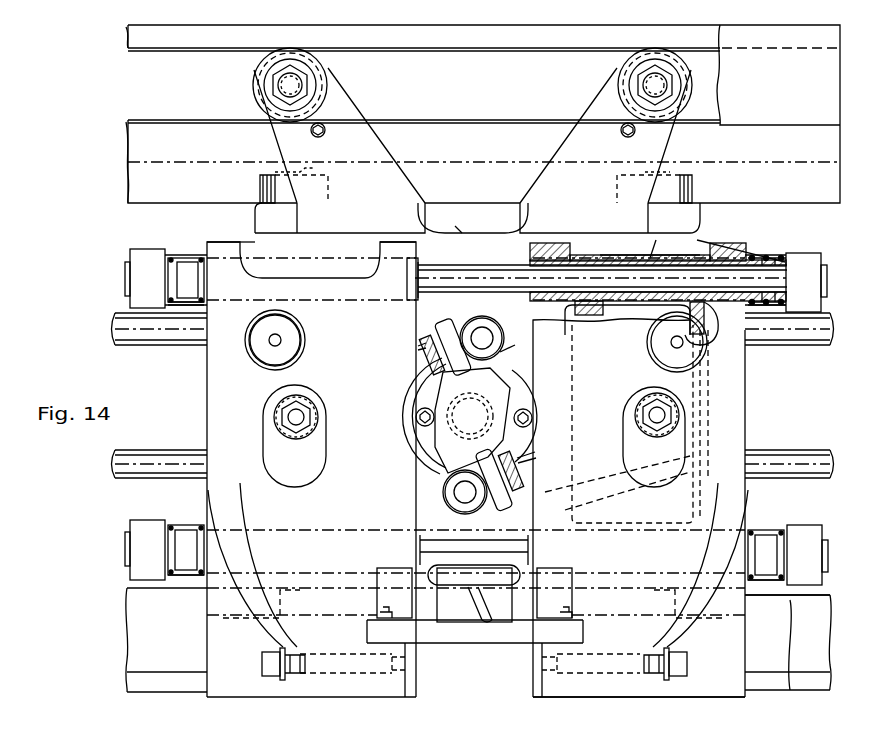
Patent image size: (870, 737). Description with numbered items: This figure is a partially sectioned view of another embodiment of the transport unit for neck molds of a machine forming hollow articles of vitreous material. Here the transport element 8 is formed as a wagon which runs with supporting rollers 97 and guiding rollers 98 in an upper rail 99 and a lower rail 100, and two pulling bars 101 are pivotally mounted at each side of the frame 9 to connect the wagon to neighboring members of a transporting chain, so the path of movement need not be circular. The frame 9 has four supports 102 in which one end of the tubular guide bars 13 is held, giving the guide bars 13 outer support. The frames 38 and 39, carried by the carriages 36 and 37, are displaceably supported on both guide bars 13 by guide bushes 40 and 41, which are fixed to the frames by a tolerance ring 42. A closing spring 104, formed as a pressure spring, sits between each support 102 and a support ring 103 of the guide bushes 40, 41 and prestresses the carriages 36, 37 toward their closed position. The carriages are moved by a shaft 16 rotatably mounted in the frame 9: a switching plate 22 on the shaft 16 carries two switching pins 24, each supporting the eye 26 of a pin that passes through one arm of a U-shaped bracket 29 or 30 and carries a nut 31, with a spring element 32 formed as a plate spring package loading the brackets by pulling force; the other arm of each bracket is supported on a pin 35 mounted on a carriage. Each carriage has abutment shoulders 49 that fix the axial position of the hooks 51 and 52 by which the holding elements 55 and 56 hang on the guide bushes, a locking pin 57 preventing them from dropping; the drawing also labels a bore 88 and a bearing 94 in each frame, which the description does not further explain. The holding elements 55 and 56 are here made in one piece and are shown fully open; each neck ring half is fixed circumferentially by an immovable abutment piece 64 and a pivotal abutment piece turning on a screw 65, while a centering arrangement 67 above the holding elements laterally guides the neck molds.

The transport element 8 is at (457, 220).
The frame 9 is at (492, 233).
The guide bar 13 is at (168, 272).
The shaft 16 is at (488, 397).
The switching plate 22 is at (485, 368).
The switching pin 24 is at (485, 335).
The eye 26 is at (440, 328).
The U-shaped bracket 29 is at (431, 318).
The U-shaped bracket 30 is at (530, 540).
The nut 31 is at (425, 372).
The spring element 32 is at (416, 412).
The pin 35 is at (304, 420).
The carriage 36 is at (660, 250).
The carriage 37 is at (266, 250).
The frame 38 is at (632, 250).
The frame 39 is at (289, 250).
The guide bush 40 is at (185, 266).
The guide bush 41 is at (606, 255).
The tolerance ring 42 is at (585, 255).
The abutment shoulder 49 is at (565, 312).
The hook 51 is at (548, 243).
The hook 52 is at (170, 255).
The holding element 55 is at (587, 706).
The holding element 56 is at (314, 706).
The locking pin 57 is at (281, 342).
The abutment piece 64 is at (408, 667).
The screw 65 is at (270, 680).
The centering arrangement 67 is at (420, 562).
The bore 88 is at (256, 364).
The bearing 94 is at (280, 425).
The supporting roller 97 is at (330, 102).
The guiding roller 98 is at (258, 185).
The upper rail 99 is at (787, 208).
The lower rail 100 is at (806, 601).
The pulling bar 101 is at (135, 345).
The support 102 is at (155, 252).
The support ring 103 is at (197, 266).
The closing spring 104 is at (775, 258).